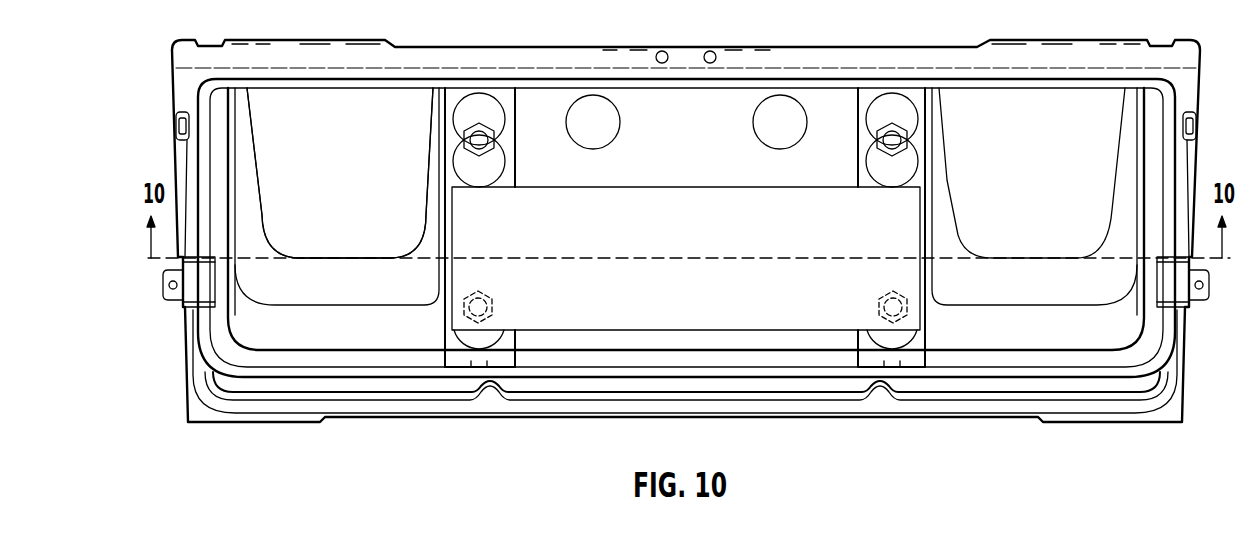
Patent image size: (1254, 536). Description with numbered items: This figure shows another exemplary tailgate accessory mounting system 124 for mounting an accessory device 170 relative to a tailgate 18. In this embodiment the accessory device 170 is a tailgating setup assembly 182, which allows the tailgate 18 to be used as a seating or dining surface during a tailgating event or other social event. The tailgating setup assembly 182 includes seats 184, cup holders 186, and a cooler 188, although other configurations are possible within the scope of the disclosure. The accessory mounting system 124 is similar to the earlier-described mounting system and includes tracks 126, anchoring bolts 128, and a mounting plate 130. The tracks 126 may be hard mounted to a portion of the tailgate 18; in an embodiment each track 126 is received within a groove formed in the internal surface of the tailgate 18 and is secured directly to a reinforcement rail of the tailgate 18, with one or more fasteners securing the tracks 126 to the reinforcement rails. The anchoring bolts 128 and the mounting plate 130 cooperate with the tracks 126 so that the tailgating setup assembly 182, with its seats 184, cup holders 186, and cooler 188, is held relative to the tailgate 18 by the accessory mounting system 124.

The tailgate 18 is at (1098, 47).
The tailgate accessory mounting system 124 is at (855, 112).
The track 126 is at (497, 154).
The anchoring bolt 128 is at (476, 117).
The mounting plate 130 is at (318, 318).
The accessory device 170 is at (427, 135).
The tailgating setup assembly 182 is at (325, 137).
The seat 184 is at (330, 282).
The cup holder 186 is at (596, 148).
The cooler 188 is at (610, 332).